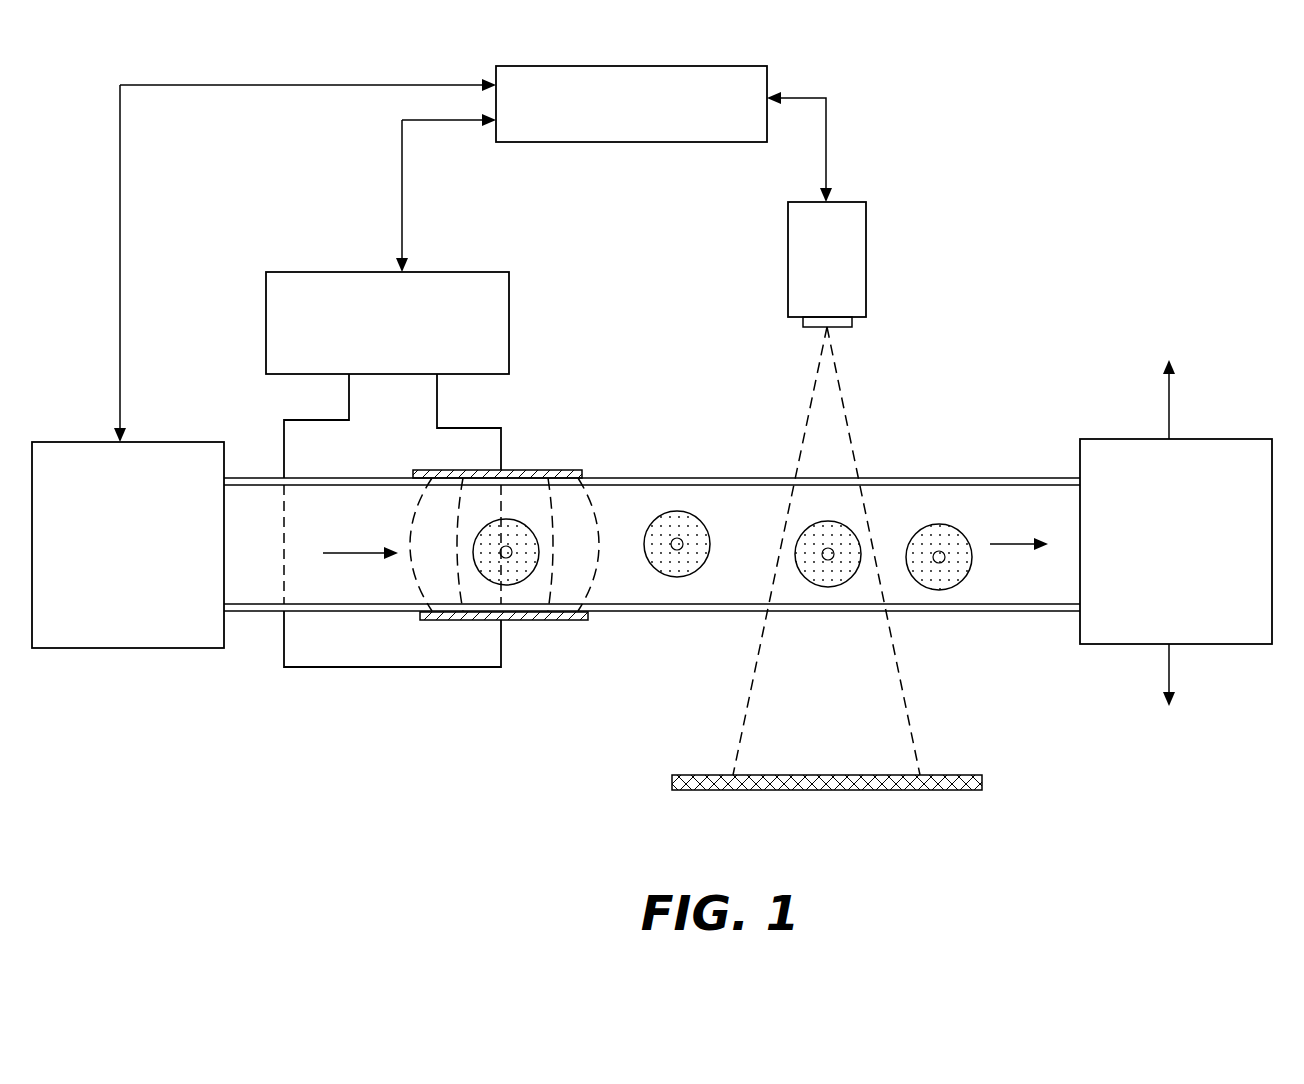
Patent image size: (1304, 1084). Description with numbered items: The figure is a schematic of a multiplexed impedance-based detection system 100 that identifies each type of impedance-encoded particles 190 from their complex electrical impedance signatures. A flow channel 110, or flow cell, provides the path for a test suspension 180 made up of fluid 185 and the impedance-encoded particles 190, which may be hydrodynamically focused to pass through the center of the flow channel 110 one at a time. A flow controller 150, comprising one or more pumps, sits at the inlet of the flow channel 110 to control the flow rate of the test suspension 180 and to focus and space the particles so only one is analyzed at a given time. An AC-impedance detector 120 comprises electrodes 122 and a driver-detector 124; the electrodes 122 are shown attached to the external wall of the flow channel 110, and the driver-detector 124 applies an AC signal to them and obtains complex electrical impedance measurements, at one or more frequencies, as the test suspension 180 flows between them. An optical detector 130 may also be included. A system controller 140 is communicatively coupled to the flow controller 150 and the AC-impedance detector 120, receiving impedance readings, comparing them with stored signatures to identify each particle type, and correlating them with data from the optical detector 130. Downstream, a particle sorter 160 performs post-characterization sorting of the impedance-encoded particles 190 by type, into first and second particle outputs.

The multiplexed impedance-based detection system 100 is at (1082, 148).
The flow channel 110 is at (686, 485).
The AC-impedance detector 120 is at (592, 444).
The electrodes 122 is at (515, 470).
The driver-detector 124 is at (387, 469).
The optical detector 130 is at (876, 197).
The system controller 140 is at (473, 254).
The flow controller 150 is at (128, 545).
The particle sorter 160 is at (1176, 530).
The test suspension 180 is at (893, 490).
The fluid 185 is at (917, 503).
The impedance-encoded particles 190 is at (673, 563).